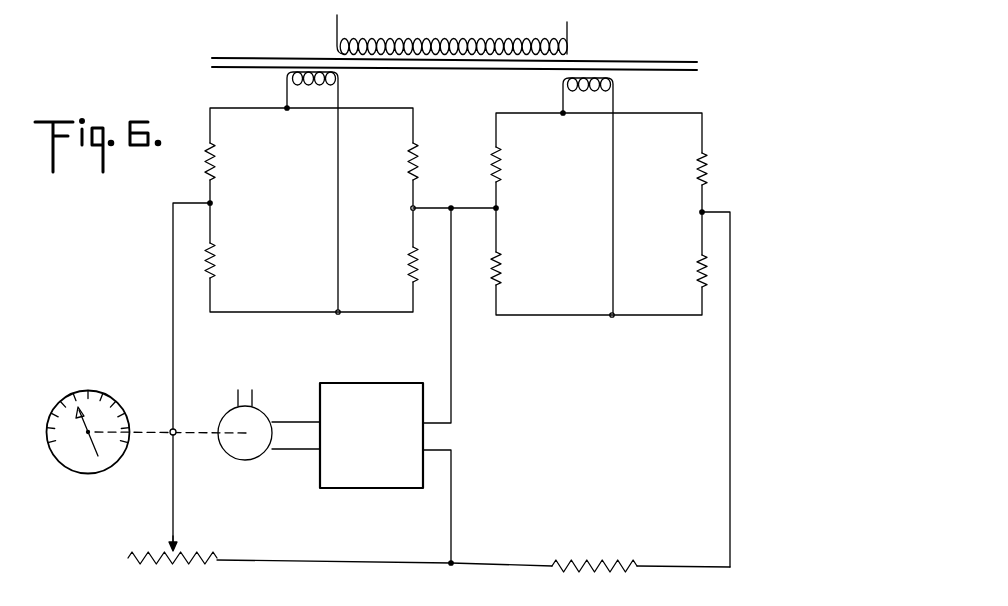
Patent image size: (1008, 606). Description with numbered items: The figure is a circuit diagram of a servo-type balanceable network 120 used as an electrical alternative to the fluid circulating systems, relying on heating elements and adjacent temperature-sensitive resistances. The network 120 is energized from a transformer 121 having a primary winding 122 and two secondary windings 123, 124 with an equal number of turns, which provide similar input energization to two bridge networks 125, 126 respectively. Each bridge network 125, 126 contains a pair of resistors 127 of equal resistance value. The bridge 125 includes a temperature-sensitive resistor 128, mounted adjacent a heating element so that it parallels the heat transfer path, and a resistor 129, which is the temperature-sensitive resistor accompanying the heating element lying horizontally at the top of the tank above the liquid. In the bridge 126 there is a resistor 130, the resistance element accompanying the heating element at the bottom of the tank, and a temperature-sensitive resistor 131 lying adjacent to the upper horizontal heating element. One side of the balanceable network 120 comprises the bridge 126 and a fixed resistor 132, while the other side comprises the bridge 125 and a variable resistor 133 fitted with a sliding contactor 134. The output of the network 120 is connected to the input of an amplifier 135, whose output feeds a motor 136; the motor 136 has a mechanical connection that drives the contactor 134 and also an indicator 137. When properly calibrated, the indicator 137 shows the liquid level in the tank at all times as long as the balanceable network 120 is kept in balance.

The servo-type balanceable network 120 is at (544, 402).
The transformer 121 is at (653, 63).
The primary winding 122 is at (456, 50).
The secondary winding 123 is at (296, 86).
The secondary winding 124 is at (571, 92).
The bridge network 125 is at (290, 222).
The bridge network 126 is at (572, 222).
The resistors 127 is at (217, 160).
The temperature-sensitive resistor 128 is at (217, 262).
The temperature-sensitive resistor 129 is at (405, 260).
The resistor 130 is at (503, 267).
The temperature-sensitive resistor 131 is at (697, 270).
The fixed resistor 132 is at (586, 560).
The variable resistor 133 is at (194, 553).
The sliding contactor 134 is at (175, 533).
The amplifier 135 is at (345, 480).
The motor 136 is at (236, 451).
The indicator 137 is at (108, 400).